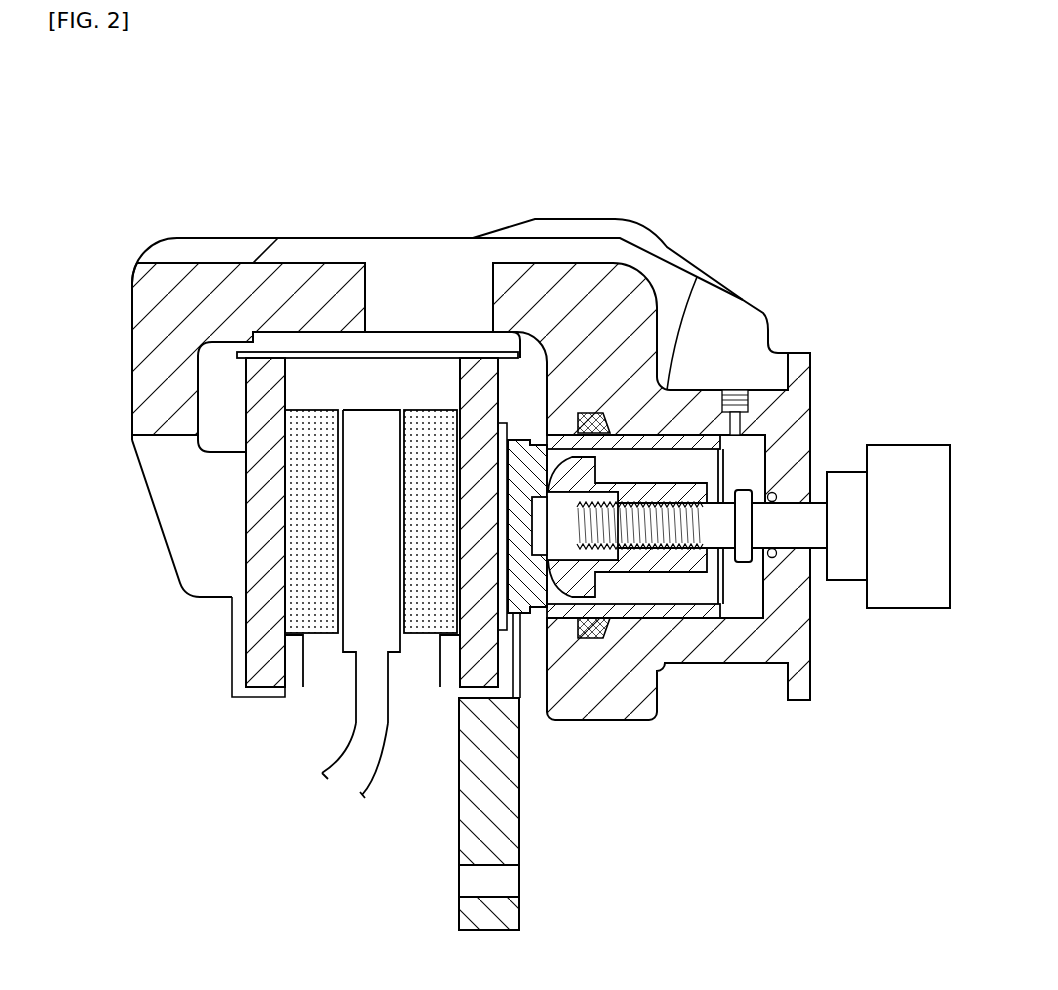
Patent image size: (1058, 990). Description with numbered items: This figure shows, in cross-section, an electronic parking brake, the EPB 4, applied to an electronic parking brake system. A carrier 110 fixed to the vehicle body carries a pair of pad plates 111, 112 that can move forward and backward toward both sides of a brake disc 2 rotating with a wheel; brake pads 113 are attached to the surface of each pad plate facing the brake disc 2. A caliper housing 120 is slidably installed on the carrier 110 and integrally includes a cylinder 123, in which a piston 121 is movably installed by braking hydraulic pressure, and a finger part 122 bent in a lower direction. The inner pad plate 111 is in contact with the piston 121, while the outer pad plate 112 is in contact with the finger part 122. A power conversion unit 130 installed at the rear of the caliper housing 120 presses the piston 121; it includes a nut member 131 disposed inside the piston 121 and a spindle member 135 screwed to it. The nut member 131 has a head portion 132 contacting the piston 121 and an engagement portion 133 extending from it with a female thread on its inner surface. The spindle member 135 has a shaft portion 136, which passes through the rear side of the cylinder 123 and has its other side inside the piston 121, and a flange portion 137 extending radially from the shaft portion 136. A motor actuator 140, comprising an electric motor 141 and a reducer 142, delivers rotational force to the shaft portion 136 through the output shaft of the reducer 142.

The EPB 4 is at (536, 106).
The brake disc 2 is at (360, 762).
The carrier 110 is at (470, 845).
The inner pad plate 111 is at (466, 668).
The outer pad plate 112 is at (257, 630).
The brake pads 113 is at (317, 640).
The caliper housing 120 is at (355, 261).
The piston 121 is at (524, 615).
The finger part 122 is at (163, 492).
The cylinder 123 is at (800, 353).
The power conversion unit 130 is at (668, 466).
The nut member 131 is at (655, 843).
The head portion 132 is at (567, 618).
The engagement portion 133 is at (653, 560).
The spindle member 135 is at (835, 800).
The shaft portion 136 is at (773, 533).
The flange portion 137 is at (745, 548).
The motor actuator 140 is at (837, 390).
The electric motor 141 is at (910, 450).
The reducer 142 is at (848, 480).